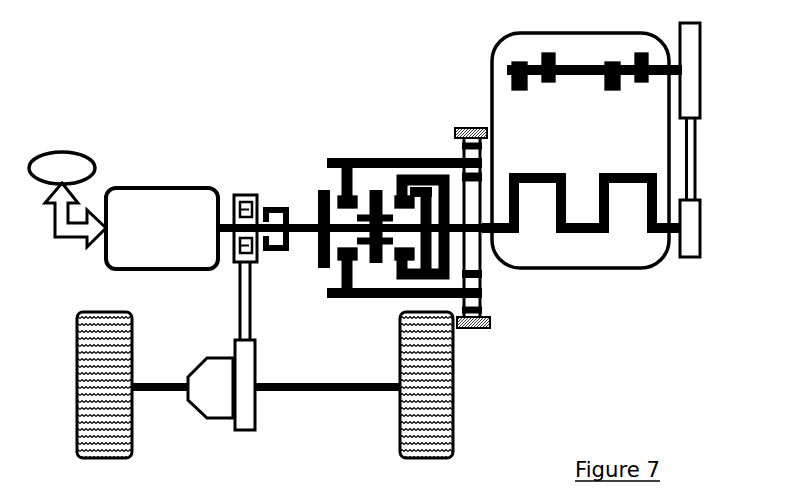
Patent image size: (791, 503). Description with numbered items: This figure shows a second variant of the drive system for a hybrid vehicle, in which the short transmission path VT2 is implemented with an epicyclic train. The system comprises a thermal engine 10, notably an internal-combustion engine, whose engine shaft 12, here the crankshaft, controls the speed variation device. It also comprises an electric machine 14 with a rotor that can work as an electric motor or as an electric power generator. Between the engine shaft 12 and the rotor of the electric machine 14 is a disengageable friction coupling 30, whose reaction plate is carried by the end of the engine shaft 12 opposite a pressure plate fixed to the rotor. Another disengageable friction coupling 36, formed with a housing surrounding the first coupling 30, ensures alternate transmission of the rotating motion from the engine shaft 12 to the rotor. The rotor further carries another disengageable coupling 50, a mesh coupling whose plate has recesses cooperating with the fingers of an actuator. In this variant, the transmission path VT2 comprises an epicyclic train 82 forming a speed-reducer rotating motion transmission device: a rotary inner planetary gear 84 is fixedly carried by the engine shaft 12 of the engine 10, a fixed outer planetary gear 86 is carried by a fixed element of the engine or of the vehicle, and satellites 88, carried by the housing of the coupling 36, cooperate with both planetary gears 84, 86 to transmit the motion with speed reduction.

The thermal engine 10 is at (617, 133).
The engine shaft 12 is at (612, 233).
The electric machine 14 is at (165, 239).
The disengageable friction coupling 30 is at (354, 168).
The disengageable friction coupling 36 is at (312, 178).
The disengageable coupling 50 is at (269, 262).
The epicyclic train 82 is at (489, 262).
The rotary inner planetary gear 84 is at (470, 208).
The fixed outer planetary gear 86 is at (470, 330).
The satellites 88 is at (458, 146).
The short transmission path VT2 is at (488, 225).